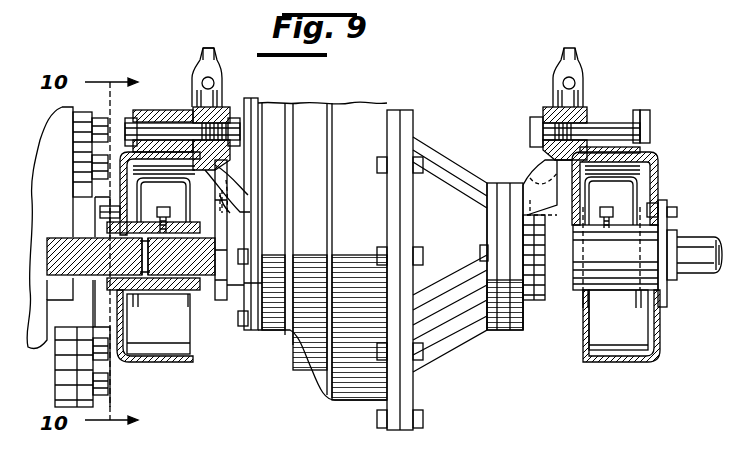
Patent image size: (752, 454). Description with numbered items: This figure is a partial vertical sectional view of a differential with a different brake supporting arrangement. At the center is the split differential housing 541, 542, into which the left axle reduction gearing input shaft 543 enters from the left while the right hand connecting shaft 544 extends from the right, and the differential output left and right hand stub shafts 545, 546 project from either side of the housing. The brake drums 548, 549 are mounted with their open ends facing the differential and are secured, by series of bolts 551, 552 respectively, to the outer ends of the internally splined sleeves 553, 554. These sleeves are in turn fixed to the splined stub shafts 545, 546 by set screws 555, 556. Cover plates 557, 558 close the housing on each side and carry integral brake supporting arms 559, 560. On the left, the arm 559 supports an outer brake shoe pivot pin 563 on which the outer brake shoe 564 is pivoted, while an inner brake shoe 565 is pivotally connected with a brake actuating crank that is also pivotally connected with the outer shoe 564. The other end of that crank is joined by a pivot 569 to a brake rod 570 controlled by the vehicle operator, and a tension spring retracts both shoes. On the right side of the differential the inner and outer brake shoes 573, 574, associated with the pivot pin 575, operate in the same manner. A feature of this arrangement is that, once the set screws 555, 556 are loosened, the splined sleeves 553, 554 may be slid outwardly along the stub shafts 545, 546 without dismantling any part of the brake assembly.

The split differential housing 541 is at (347, 402).
The split differential housing 542 is at (455, 353).
The left axle reduction gearing input shaft 543 is at (60, 238).
The right hand connecting shaft 544 is at (697, 237).
The differential output left hand stub shaft 545 is at (207, 293).
The differential output right hand stub shaft 546 is at (567, 283).
The brake drum 548 is at (165, 363).
The brake drum 549 is at (615, 362).
The bolts 551 is at (143, 213).
The bolts 552 is at (668, 205).
The internally splined sleeve 553 is at (168, 294).
The internally splined sleeve 554 is at (612, 292).
The set screw 555 is at (182, 203).
The set screw 556 is at (607, 212).
The cover plate 557 is at (262, 283).
The cover plate 558 is at (532, 290).
The brake supporting arm 559 is at (233, 180).
The brake supporting arm 560 is at (525, 172).
The outer brake shoe pivot pin 563 is at (163, 132).
The outer brake shoe 564 is at (137, 110).
The inner brake shoe 565 is at (162, 177).
The pivot 569 is at (192, 97).
The brake rod 570 is at (205, 68).
The inner brake shoe 573 is at (658, 168).
The outer brake shoe 574 is at (642, 112).
The pivot pin 575 is at (653, 130).